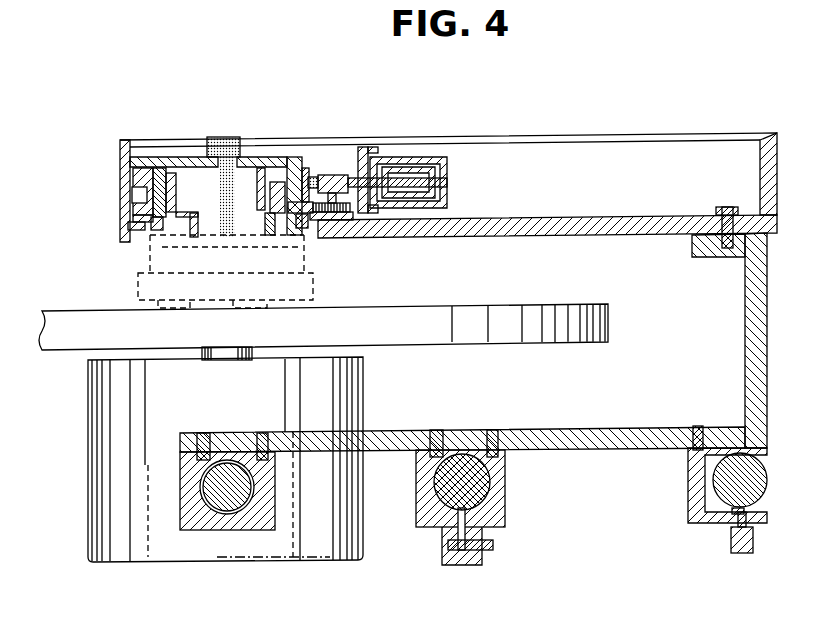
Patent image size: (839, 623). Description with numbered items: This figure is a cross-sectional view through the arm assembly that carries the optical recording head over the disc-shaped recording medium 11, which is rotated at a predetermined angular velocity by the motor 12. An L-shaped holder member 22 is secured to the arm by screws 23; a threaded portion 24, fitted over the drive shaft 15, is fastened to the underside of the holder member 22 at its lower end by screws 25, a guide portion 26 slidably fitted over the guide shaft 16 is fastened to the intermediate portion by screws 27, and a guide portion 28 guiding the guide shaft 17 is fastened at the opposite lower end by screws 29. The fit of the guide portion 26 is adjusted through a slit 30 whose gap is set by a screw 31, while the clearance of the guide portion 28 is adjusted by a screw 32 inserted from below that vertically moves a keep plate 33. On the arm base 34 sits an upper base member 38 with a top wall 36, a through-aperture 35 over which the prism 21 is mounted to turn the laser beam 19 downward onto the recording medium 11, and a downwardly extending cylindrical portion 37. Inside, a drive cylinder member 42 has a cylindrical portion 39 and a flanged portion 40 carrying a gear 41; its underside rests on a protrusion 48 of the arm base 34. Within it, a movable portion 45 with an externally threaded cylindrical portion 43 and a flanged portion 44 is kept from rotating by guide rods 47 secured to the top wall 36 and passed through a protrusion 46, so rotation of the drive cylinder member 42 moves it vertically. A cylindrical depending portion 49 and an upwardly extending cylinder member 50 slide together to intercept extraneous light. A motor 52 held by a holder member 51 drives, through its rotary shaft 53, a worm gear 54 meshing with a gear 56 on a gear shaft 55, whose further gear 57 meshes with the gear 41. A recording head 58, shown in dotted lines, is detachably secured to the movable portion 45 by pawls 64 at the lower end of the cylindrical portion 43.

The recording medium 11 is at (595, 296).
The motor 12 is at (102, 430).
The drive shaft 15 is at (213, 510).
The guide shaft 16 is at (478, 482).
The guide shaft 17 is at (760, 480).
The laser beam 19 is at (217, 235).
The prism 21 is at (226, 137).
The holder member 22 is at (768, 345).
The screws 23 is at (724, 207).
The threaded portion 24 is at (250, 537).
The screws 25 is at (203, 432).
The guide portion 26 is at (419, 528).
The screws 27 is at (435, 428).
The guide portion 28 is at (695, 490).
The screws 29 is at (699, 425).
The slit 30 is at (462, 566).
The screw 31 is at (492, 545).
The screw 32 is at (731, 538).
The keep plate 33 is at (747, 512).
The arm base 34 is at (560, 237).
The through-aperture 35 is at (212, 172).
The top wall 36 is at (251, 146).
The cylindrical portion 37 is at (304, 177).
The upper base member 38 is at (153, 150).
The cylindrical portion 39 is at (289, 165).
The flanged portion 40 is at (310, 222).
The gear 41 is at (131, 197).
The drive cylinder member 42 is at (135, 225).
The cylindrical portion 43 is at (160, 230).
The flanged portion 44 is at (143, 228).
The movable portion 45 is at (186, 240).
The protrusion 46 is at (172, 190).
The guide rods 47 is at (177, 163).
The protrusion 48 is at (134, 218).
The cylindrical depending portion 49 is at (250, 183).
The cylinder member 50 is at (257, 235).
The holder member 51 is at (368, 148).
The motor 52 is at (437, 157).
The rotary shaft 53 is at (384, 166).
The worm gear 54 is at (340, 176).
The gear shaft 55 is at (355, 208).
The gear 56 is at (316, 178).
The gear 57 is at (340, 210).
The recording head 58 is at (318, 283).
The pawls 64 is at (172, 235).